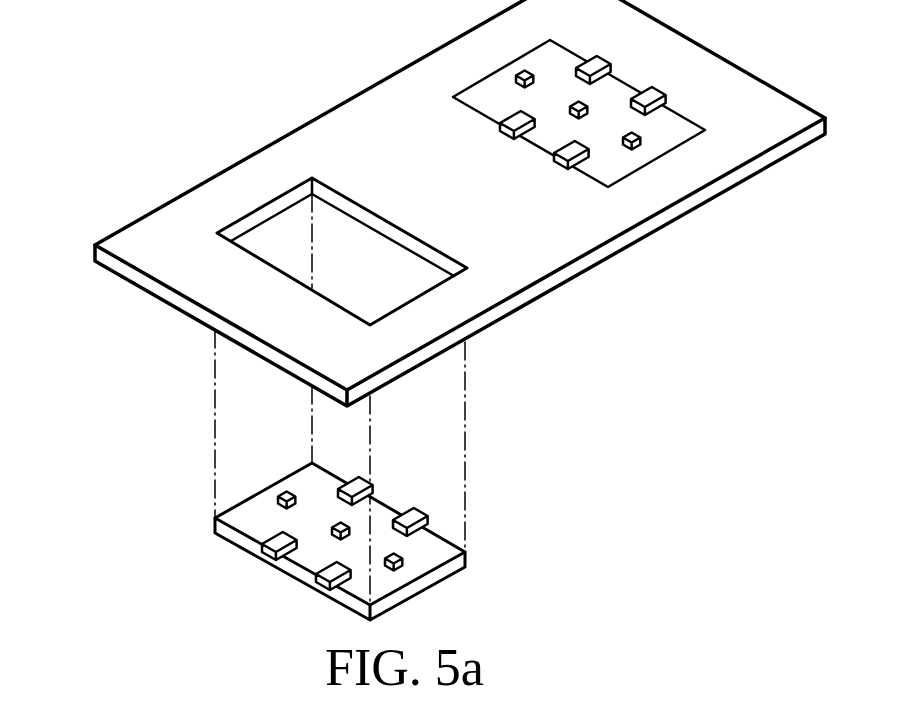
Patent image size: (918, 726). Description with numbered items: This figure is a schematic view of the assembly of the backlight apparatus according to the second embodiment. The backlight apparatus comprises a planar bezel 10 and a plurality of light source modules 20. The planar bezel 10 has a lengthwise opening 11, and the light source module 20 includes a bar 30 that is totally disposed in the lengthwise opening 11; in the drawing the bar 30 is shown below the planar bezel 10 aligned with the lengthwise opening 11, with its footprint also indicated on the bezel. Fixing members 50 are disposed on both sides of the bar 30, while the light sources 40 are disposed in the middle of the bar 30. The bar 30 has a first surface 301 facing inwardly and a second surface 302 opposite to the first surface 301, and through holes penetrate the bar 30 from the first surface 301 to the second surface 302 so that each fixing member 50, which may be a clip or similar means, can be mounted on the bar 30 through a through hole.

The planar bezel 10 is at (420, 203).
The lengthwise opening 11 is at (313, 187).
The light source module 20 is at (273, 525).
The bar 30 is at (341, 544).
The first surface 301 is at (245, 520).
The second surface 302 is at (312, 588).
The light source 40 is at (287, 492).
The fixing member 50 is at (419, 515).